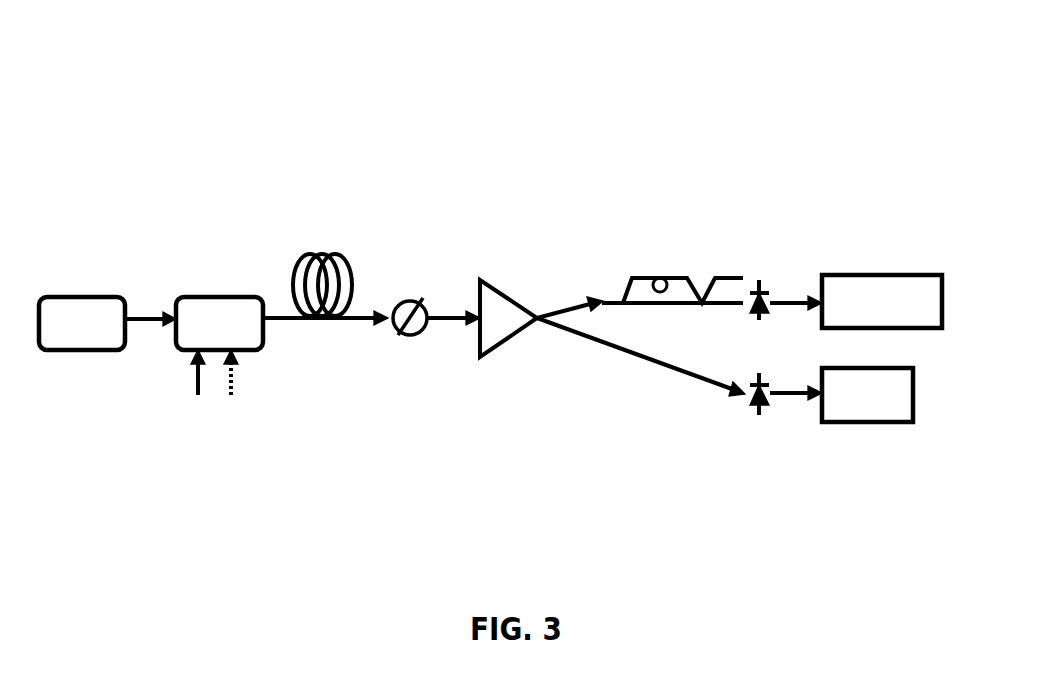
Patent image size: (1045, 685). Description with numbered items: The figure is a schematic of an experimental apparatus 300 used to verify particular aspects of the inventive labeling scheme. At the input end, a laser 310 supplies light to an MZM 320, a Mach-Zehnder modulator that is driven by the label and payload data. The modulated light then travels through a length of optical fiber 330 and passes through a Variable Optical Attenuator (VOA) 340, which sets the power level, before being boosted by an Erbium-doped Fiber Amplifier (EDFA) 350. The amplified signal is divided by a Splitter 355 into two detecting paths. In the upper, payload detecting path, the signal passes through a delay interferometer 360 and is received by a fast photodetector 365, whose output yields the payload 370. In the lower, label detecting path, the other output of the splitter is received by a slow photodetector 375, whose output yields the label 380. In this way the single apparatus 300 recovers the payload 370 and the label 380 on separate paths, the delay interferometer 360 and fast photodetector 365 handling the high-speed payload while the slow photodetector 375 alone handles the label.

The apparatus 300 is at (918, 43).
The laser 310 is at (90, 297).
The MZM 320 is at (211, 297).
The optical fiber 330 is at (300, 258).
The Variable Optical Attenuator 340 is at (403, 301).
The Erbium-doped Fiber Amplifier 350 is at (480, 283).
The Splitter 355 is at (546, 318).
The delay interferometer 360 is at (612, 300).
The fast photodetector 365 is at (815, 337).
The payload 370 is at (846, 275).
The slow photodetector 375 is at (765, 445).
The label 380 is at (895, 422).